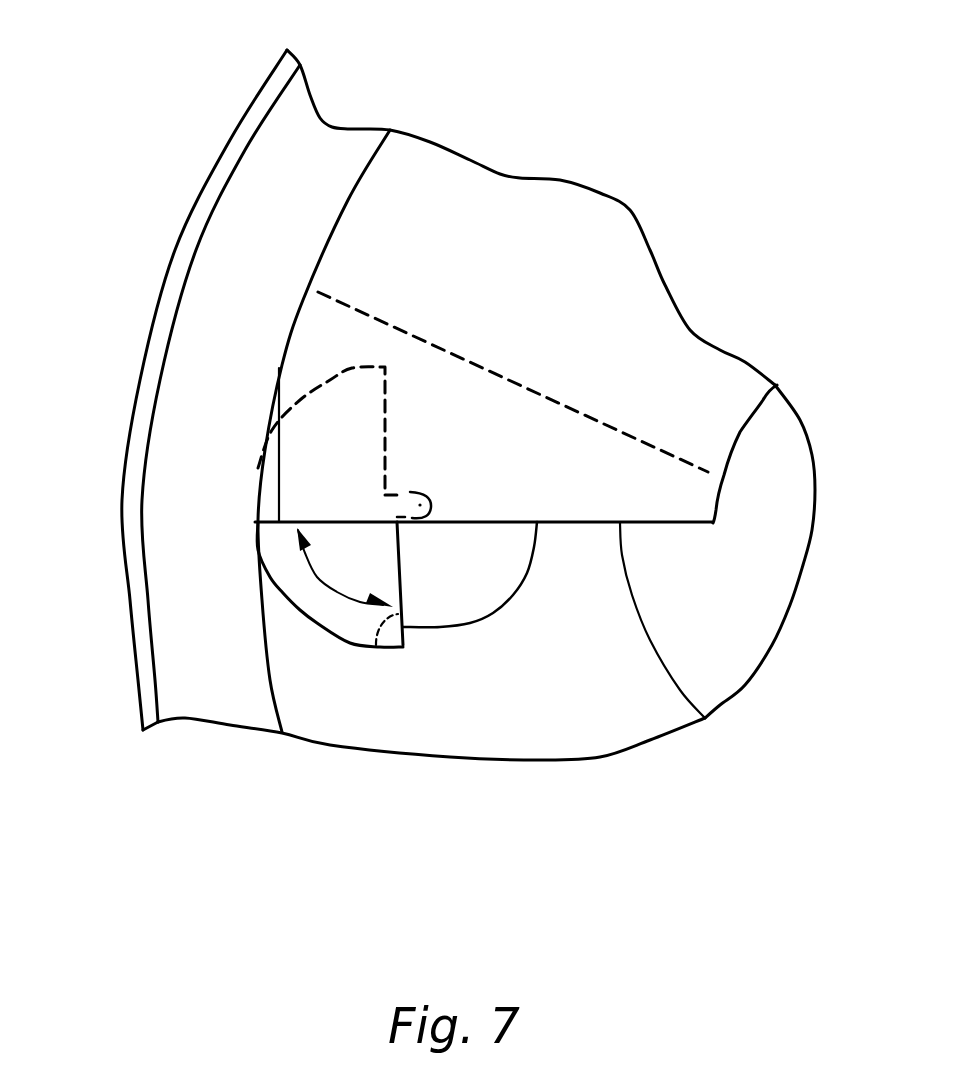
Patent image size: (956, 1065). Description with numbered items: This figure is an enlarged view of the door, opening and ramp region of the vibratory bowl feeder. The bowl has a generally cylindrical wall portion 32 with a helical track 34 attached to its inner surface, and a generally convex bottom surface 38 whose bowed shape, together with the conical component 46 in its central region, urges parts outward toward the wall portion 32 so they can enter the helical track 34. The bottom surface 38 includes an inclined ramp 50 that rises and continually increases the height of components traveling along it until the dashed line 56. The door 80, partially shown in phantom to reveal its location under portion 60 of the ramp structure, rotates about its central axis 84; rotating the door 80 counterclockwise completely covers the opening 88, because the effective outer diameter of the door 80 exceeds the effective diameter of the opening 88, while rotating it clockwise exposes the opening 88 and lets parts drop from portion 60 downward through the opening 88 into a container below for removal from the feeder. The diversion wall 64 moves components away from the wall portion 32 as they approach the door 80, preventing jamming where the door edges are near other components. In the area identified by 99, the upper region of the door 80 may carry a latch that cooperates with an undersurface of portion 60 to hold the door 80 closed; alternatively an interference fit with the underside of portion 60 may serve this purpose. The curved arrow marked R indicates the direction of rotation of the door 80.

The wall portion 32 is at (188, 240).
The helical track 34 is at (318, 163).
The bottom surface 38 is at (556, 709).
The conical component 46 is at (719, 639).
The ramp 50 is at (738, 398).
The dashed line 56 is at (543, 395).
The portion of the ramp structure 60 is at (694, 500).
The diversion wall 64 is at (280, 458).
The door 80 is at (277, 548).
The central axis 84 is at (420, 490).
The opening 88 is at (499, 572).
The latch area 99 is at (393, 637).
The rotation direction R is at (340, 590).